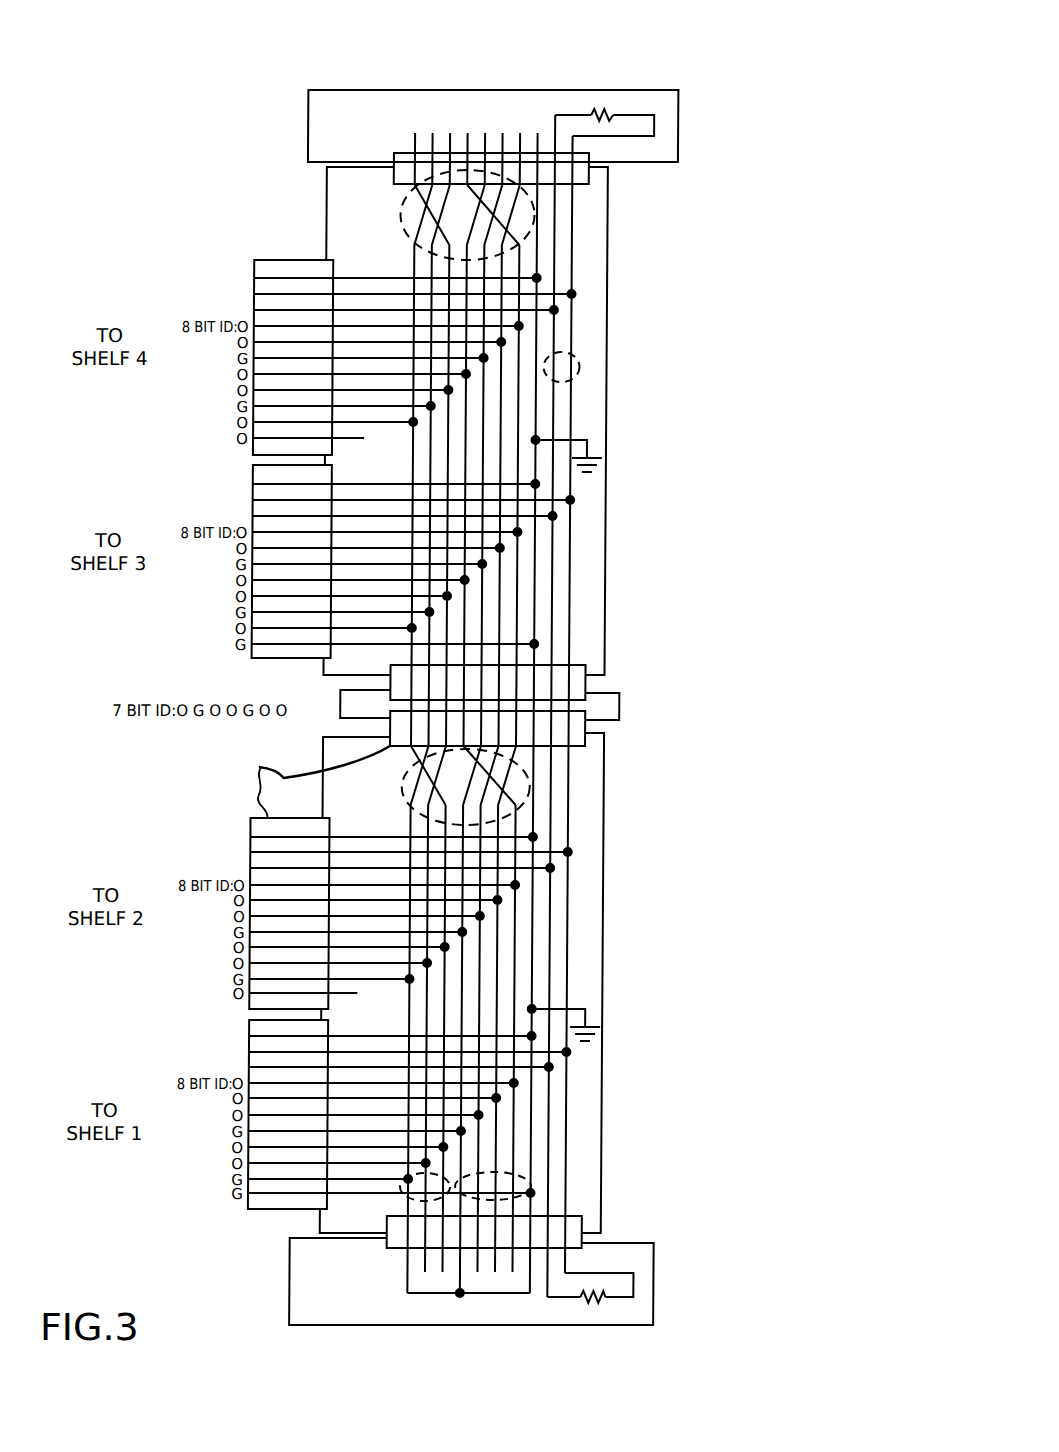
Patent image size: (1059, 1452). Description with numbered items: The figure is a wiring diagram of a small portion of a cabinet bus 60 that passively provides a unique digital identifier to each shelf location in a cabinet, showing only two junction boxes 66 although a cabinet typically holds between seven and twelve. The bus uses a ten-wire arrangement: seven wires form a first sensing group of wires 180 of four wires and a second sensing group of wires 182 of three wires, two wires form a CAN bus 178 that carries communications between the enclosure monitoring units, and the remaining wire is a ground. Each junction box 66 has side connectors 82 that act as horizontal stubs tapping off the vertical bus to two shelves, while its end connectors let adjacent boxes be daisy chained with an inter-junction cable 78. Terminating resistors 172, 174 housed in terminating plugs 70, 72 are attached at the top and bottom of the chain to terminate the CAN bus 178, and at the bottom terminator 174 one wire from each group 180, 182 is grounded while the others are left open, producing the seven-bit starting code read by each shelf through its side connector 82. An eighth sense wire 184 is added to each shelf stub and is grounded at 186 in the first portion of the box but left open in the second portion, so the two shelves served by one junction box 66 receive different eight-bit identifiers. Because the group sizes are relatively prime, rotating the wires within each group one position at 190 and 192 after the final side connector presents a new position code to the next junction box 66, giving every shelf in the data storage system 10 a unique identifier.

The data storage system 10 is at (600, 706).
The cabinet bus 60 is at (190, 213).
The junction box 66 is at (607, 593).
The top terminating plug 70 is at (677, 140).
The bottom terminating plug 72 is at (660, 1310).
The inter-junction cable 78 is at (622, 707).
The side connector 82 is at (312, 782).
The top terminating resistor 172 is at (616, 112).
The bottom terminating resistor 174 is at (612, 1300).
The CAN bus 178 is at (580, 367).
The first sensing group of wires 180 is at (536, 1180).
The second sensing group of wires 182 is at (453, 1176).
The sense wire 184 is at (265, 992).
The ground point of sense wire 186 is at (296, 1252).
The lower wire rotation 190 is at (530, 795).
The upper wire rotation 192 is at (540, 218).